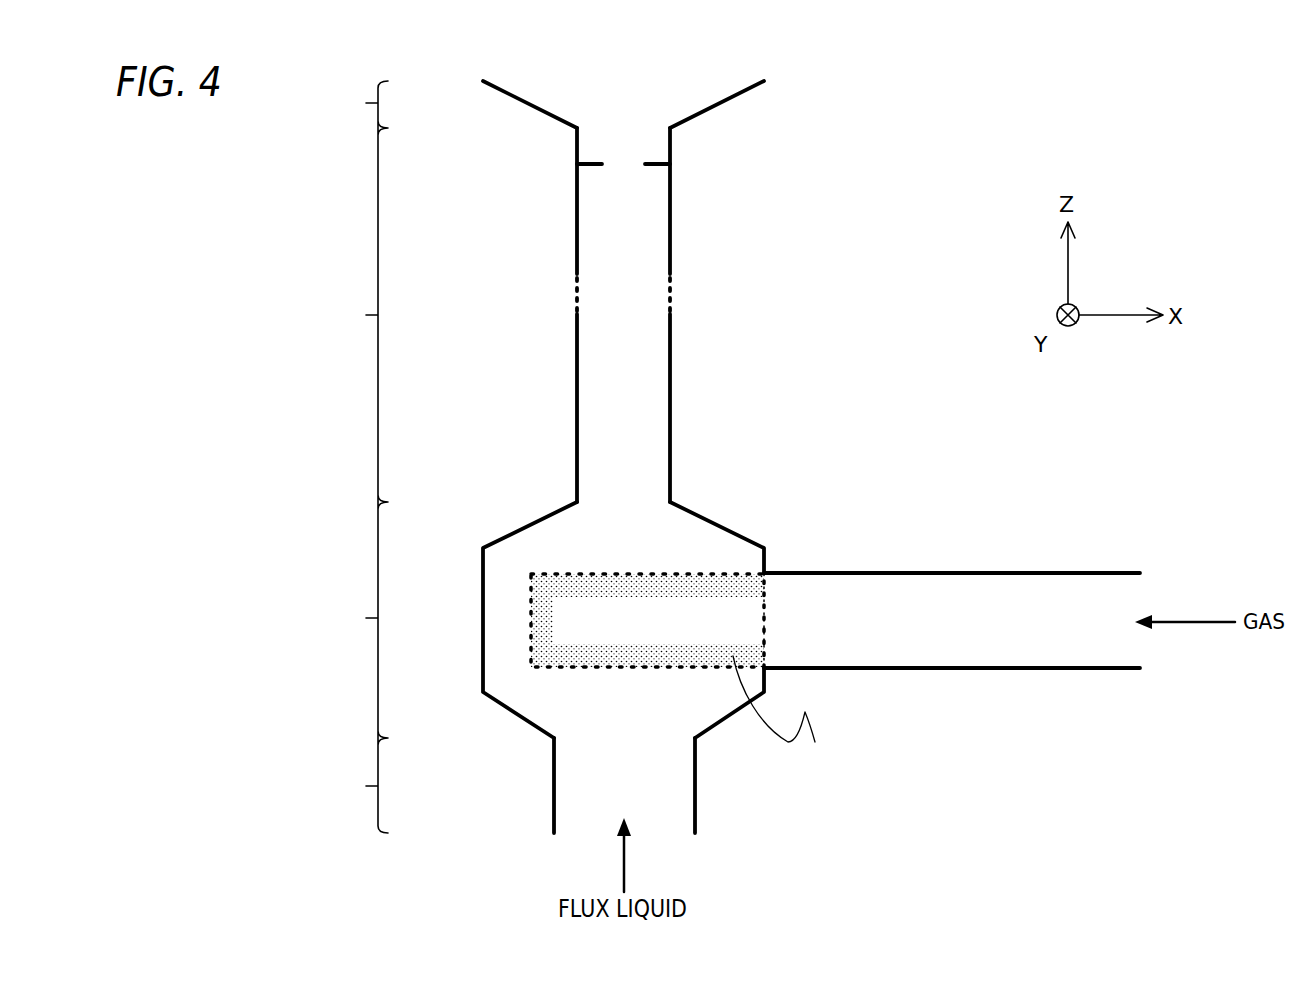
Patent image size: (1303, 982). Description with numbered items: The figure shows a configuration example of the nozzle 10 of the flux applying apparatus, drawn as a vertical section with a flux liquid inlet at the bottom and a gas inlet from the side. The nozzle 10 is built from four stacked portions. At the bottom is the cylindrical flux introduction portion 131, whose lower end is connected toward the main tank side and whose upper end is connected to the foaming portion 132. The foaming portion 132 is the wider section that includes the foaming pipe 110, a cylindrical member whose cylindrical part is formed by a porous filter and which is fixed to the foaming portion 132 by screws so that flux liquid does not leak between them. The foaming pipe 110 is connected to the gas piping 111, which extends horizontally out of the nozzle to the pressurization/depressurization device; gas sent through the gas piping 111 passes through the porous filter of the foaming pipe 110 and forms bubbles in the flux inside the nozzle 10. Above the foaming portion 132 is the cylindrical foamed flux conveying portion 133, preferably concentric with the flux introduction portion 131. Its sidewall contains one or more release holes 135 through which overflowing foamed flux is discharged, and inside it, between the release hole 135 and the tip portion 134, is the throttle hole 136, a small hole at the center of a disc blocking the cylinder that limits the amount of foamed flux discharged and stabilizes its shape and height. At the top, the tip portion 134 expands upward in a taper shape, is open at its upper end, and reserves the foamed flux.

The nozzle 10 is at (789, 441).
The foaming pipe 110 is at (683, 572).
The gas piping 111 is at (953, 572).
The flux introduction portion 131 is at (504, 785).
The foaming portion 132 is at (538, 620).
The foamed flux conveying portion 133 is at (539, 315).
The tip portion 134 is at (538, 104).
The release hole 135 is at (680, 295).
The throttle hole 136 is at (680, 164).